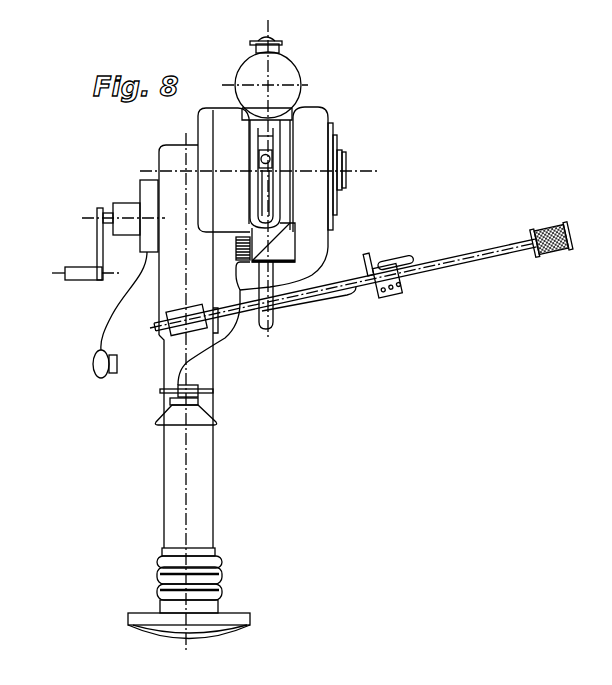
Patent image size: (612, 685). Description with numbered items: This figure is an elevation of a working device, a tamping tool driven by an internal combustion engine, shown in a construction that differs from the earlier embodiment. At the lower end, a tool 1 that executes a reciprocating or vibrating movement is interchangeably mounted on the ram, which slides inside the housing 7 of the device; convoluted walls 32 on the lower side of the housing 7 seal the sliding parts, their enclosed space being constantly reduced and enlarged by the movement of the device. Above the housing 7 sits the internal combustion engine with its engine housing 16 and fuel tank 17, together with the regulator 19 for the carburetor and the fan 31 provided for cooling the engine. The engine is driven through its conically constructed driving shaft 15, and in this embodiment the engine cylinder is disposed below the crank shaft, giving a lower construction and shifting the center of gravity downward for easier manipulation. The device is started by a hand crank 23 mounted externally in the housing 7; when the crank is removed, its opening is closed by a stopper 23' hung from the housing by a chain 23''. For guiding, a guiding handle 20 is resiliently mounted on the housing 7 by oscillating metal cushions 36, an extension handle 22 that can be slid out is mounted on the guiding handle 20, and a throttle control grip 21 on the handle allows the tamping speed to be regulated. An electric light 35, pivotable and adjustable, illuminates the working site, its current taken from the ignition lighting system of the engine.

The tool 1 is at (210, 628).
The housing 7 is at (198, 483).
The driving shaft 15 is at (345, 173).
The engine housing 16 is at (310, 123).
The fuel tank 17 is at (282, 72).
The regulator 19 is at (317, 312).
The guiding handle 20 is at (347, 287).
The throttle control grip 21 is at (406, 250).
The extension handle 22 is at (457, 270).
The hand crank 23 is at (90, 230).
The stopper 23' is at (77, 367).
The chain 23'' is at (97, 301).
The fan 31 is at (233, 243).
The convoluted walls 32 is at (200, 590).
The electric light 35 is at (192, 410).
The oscillating metal cushions 36 is at (168, 333).